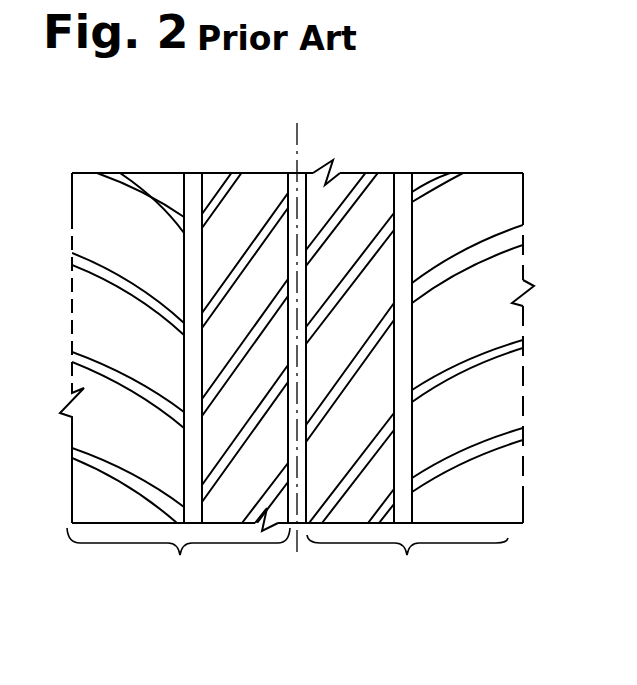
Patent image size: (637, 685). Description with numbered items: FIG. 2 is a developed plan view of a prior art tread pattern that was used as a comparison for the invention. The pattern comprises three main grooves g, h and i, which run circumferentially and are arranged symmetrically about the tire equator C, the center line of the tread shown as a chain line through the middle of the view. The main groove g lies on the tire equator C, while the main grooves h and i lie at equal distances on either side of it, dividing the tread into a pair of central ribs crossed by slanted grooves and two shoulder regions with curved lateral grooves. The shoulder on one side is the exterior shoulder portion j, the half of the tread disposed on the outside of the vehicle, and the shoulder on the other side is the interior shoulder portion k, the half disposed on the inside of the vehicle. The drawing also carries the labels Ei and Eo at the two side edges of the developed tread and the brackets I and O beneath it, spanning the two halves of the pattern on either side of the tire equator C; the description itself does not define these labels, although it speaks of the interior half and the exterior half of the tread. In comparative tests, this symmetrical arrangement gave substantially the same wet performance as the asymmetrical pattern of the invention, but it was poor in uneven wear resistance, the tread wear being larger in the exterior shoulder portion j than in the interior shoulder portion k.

The inner tread edge Ei is at (67, 314).
The outer tread edge Eo is at (527, 314).
The tire equator C is at (299, 320).
The main groove h is at (190, 198).
The main groove g is at (306, 205).
The main groove i is at (412, 215).
The exterior shoulder portion j is at (456, 505).
The interior shoulder portion k is at (118, 521).
The inner tread region I is at (175, 560).
The outer tread region O is at (407, 566).